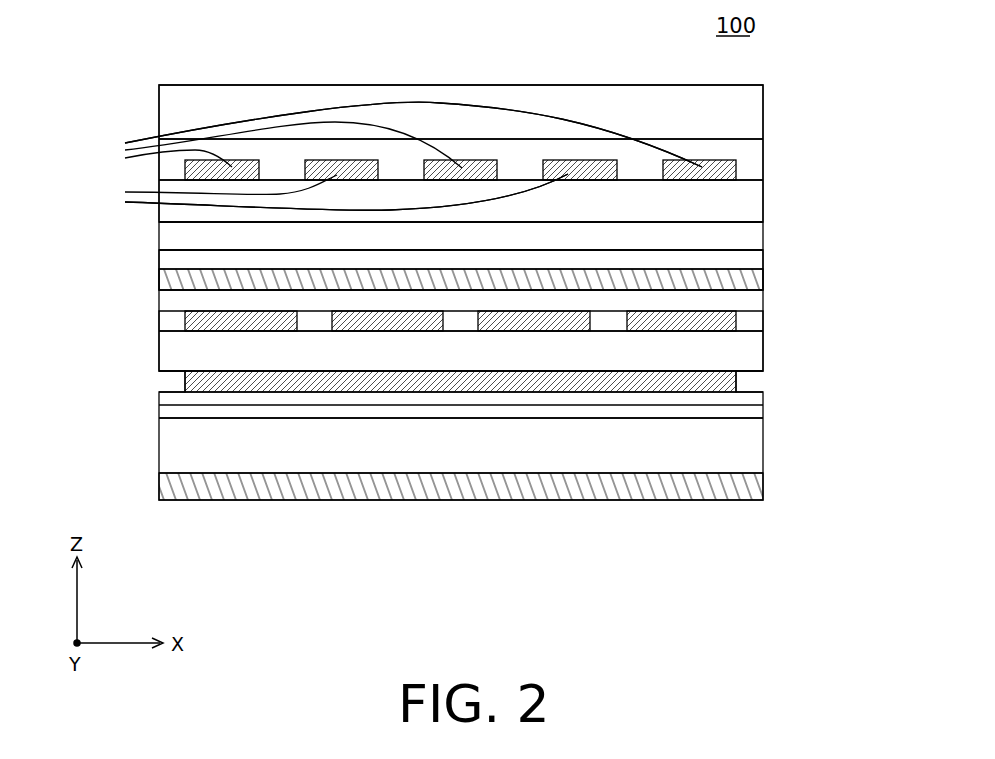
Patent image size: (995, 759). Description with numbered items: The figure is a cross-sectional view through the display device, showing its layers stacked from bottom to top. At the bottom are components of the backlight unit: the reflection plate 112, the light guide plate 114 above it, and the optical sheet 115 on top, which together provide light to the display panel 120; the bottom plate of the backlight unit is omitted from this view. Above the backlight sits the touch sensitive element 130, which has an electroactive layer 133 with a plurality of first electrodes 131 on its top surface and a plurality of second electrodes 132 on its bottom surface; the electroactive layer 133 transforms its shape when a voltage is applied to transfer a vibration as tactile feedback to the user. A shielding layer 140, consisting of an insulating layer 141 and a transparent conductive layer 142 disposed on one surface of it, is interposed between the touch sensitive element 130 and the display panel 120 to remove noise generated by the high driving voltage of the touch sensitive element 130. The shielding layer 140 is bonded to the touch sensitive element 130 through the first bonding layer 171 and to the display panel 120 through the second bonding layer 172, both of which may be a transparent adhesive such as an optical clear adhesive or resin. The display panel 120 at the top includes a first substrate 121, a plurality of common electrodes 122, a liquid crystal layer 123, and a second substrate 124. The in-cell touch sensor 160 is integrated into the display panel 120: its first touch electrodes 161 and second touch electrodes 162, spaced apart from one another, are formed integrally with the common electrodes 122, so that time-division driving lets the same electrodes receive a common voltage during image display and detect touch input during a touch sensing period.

The reflection plate 112 is at (748, 487).
The light guide plate 114 is at (748, 445).
The optical sheet 115 is at (747, 395).
The display panel 120 is at (831, 98).
The first substrate 121 is at (748, 214).
The common electrodes 122 is at (603, 173).
The liquid crystal layer 123 is at (748, 150).
The second substrate 124 is at (748, 104).
The touch sensitive element 130 is at (831, 334).
The first electrodes 131 is at (560, 322).
The second electrodes 132 is at (745, 380).
The electroactive layer 133 is at (748, 362).
The shielding layer 140 is at (831, 250).
The insulating layer 141 is at (748, 255).
The transparent conductive layer 142 is at (748, 279).
The touch sensor 160 is at (82, 148).
The first touch electrodes 161 is at (395, 135).
The second touch electrodes 162 is at (328, 192).
The first bonding layer 171 is at (748, 304).
The second bonding layer 172 is at (748, 234).